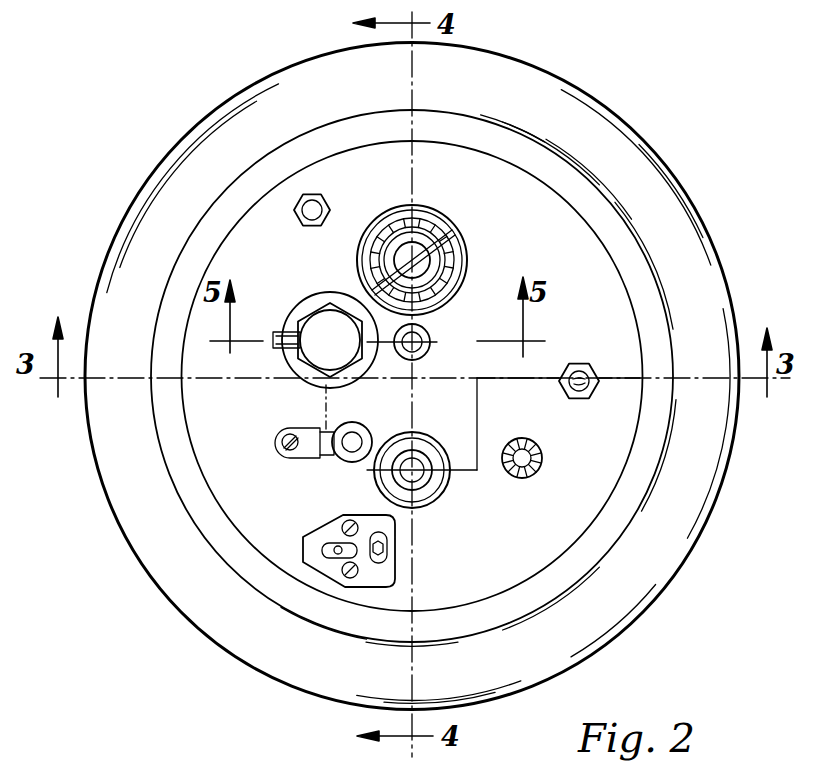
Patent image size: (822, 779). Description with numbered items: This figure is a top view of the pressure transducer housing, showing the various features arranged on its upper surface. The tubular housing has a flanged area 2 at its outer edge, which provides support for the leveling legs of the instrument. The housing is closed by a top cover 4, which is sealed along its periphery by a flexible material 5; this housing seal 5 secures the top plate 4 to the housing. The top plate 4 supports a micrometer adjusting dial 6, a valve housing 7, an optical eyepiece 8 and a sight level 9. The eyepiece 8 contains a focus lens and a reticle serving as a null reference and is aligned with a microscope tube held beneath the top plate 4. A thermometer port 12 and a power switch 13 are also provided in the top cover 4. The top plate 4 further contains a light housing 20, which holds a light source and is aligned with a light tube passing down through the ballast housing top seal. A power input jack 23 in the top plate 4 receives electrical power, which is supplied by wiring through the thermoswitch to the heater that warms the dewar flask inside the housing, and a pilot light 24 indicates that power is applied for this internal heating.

The flanged area 2 is at (693, 478).
The top cover 4 is at (580, 257).
The flexible material 5 is at (638, 287).
The micrometer adjusting dial 6 is at (463, 246).
The valve housing 7 is at (330, 330).
The optical eyepiece 8 is at (441, 495).
The sight level 9 is at (385, 560).
The thermometer port 12 is at (432, 337).
The power switch 13 is at (568, 366).
The light housing 20 is at (350, 456).
The power input jack 23 is at (311, 214).
The pilot light 24 is at (536, 472).